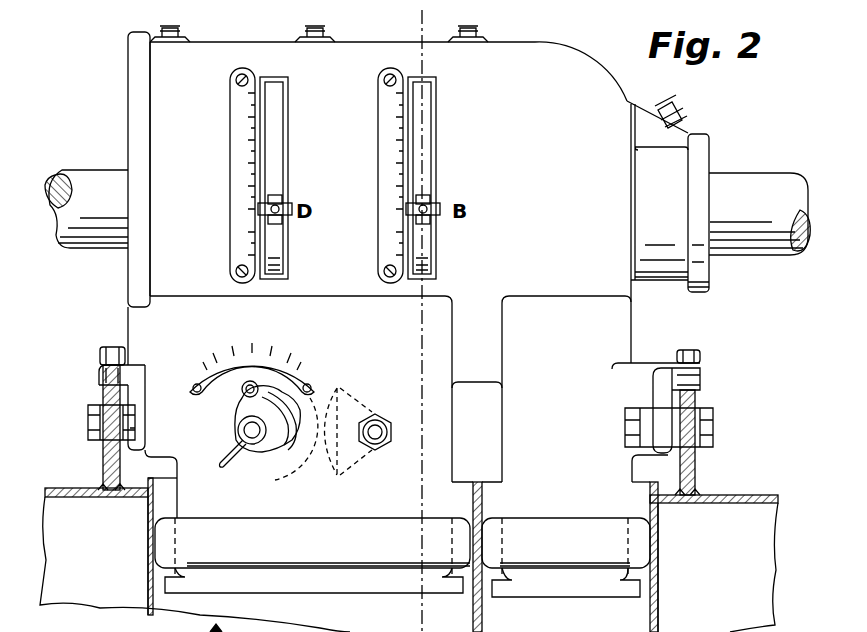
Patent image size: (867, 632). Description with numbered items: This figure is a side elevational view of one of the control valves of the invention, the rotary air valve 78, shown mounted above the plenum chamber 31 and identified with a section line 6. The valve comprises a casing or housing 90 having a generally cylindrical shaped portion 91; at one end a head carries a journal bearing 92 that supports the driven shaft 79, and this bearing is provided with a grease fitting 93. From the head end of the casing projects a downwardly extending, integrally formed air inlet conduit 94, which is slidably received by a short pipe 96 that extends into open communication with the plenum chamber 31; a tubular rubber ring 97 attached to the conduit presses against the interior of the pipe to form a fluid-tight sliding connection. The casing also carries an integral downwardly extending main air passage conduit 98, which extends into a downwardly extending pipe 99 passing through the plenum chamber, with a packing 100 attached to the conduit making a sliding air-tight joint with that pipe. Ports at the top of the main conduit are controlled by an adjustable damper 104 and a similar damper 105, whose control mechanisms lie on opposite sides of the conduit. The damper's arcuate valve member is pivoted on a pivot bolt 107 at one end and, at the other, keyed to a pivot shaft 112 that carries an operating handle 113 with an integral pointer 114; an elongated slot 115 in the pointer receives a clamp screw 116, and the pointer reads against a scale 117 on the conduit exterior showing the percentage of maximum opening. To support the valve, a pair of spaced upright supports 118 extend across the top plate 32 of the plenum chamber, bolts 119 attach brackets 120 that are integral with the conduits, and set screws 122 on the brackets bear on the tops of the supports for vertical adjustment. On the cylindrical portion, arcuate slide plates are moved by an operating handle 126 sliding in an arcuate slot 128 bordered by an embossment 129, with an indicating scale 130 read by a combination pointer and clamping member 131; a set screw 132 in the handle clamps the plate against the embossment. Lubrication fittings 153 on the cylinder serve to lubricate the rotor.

The section line 6- 6 is at (432, 17).
The plenum chamber 31 is at (409, 564).
The top plate 32 is at (68, 488).
The rotary air valve 78 is at (700, 118).
The driven shaft 79 is at (756, 185).
The casing 90 is at (519, 165).
The cylindrical shaped portion 91 is at (335, 165).
The journal bearing 92 is at (662, 265).
The grease fitting 93 is at (668, 104).
The air inlet conduit 94 is at (512, 437).
The short pipe 96 is at (650, 605).
The tubular rubber ring 97 is at (535, 553).
The main air passage conduit 98 is at (445, 428).
The downwardly extending pipe 99 is at (185, 597).
The packing 100 is at (355, 548).
The adjustable damper 104 is at (355, 465).
The damper 105 is at (248, 472).
The pivot bolt 107 is at (380, 420).
The pivot shaft 112 is at (258, 438).
The operating handle 113 is at (222, 455).
The pointer 114 is at (286, 437).
The elongated slot 115 is at (286, 416).
The clamp screw 116 is at (244, 394).
The scale 117 is at (292, 350).
The upright supports 118 is at (110, 462).
The bolts 119 is at (95, 420).
The brackets 120 is at (140, 378).
The set screws 122 is at (104, 350).
The operating handle 126 is at (280, 198).
The arcuate slot 128 is at (272, 150).
The embossment 129 is at (285, 100).
The indicating scale 130 is at (237, 125).
The pointer and clamping member 131 is at (258, 212).
The set screw 132 is at (282, 218).
The lubrication fittings 153 is at (178, 28).